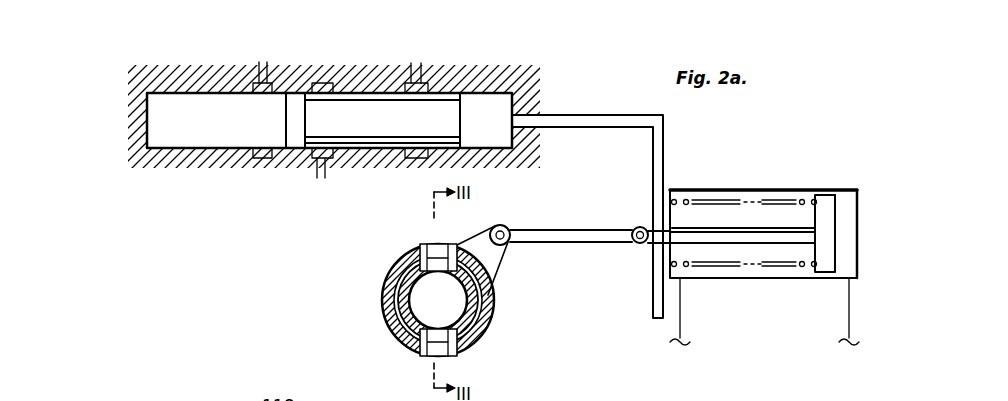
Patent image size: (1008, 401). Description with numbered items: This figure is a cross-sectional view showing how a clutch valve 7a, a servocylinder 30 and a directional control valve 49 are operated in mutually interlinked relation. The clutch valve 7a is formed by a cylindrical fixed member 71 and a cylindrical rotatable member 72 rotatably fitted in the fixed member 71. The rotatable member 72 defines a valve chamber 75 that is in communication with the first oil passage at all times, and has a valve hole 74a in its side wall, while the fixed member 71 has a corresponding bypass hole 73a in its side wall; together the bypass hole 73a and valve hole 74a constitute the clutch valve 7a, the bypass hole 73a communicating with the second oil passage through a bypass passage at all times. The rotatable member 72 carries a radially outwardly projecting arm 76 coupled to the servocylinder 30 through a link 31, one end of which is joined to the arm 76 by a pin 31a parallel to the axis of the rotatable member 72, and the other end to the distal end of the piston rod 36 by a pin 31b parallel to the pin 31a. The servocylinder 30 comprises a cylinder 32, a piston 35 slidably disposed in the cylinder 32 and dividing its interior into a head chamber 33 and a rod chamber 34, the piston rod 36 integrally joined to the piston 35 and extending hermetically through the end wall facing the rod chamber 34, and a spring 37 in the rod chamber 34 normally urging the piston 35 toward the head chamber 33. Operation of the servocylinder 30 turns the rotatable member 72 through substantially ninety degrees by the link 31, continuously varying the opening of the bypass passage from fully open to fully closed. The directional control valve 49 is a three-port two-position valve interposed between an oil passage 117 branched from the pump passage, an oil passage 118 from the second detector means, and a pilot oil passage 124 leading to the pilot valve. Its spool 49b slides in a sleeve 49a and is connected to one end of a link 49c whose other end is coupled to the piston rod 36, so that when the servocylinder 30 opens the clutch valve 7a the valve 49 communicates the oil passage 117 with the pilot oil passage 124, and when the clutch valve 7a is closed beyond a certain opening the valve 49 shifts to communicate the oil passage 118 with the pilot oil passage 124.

The directional control valve 49 is at (357, 63).
The sleeve 49a is at (212, 80).
The spool 49b is at (371, 126).
The link 49c is at (607, 117).
The oil passage 118 is at (263, 66).
The oil passage 117 is at (426, 66).
The pilot oil passage 124 is at (320, 169).
The link 31 is at (572, 227).
The pin 31a is at (498, 225).
The pin 31b is at (641, 224).
The servocylinder 30 is at (770, 171).
The cylinder 32 is at (858, 208).
The head chamber 33 is at (850, 243).
The rod chamber 34 is at (680, 215).
The piston 35 is at (825, 208).
The piston rod 36 is at (782, 237).
The spring 37 is at (692, 200).
The clutch valve 7a is at (440, 302).
The cylindrical fixed member 71 is at (387, 292).
The cylindrical rotatable member 72 is at (487, 326).
The bypass hole 73a is at (448, 247).
The valve hole 74a is at (418, 250).
The valve chamber 75 is at (445, 302).
The arm 76 is at (500, 258).